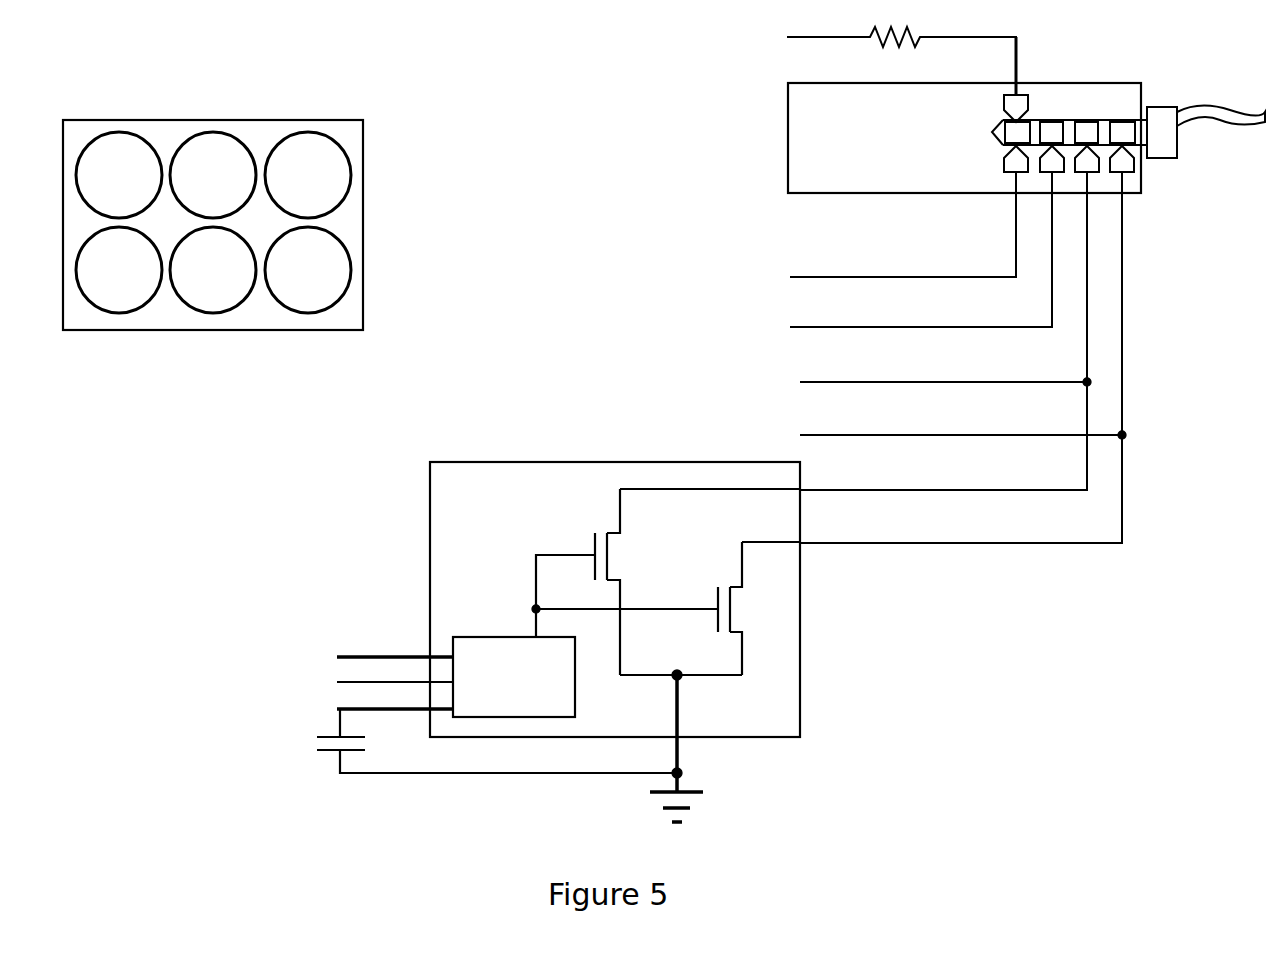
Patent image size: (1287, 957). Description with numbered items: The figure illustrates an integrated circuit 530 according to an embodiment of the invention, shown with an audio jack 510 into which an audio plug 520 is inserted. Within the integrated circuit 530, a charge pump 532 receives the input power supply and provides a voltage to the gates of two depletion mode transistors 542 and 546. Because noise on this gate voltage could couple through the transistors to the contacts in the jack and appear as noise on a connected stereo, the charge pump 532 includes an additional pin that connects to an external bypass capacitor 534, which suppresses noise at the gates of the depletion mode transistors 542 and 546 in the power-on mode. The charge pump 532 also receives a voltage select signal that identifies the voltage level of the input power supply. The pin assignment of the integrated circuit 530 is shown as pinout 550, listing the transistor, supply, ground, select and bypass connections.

The audio jack 510 is at (788, 125).
The audio plug 520 is at (1068, 120).
The integrated circuit 530 is at (480, 462).
The charge pump 532 is at (463, 637).
The bypass capacitor 534 is at (335, 752).
The depletion mode transistor 542 is at (607, 557).
The depletion mode transistor 546 is at (735, 612).
The pinout 550 is at (285, 120).